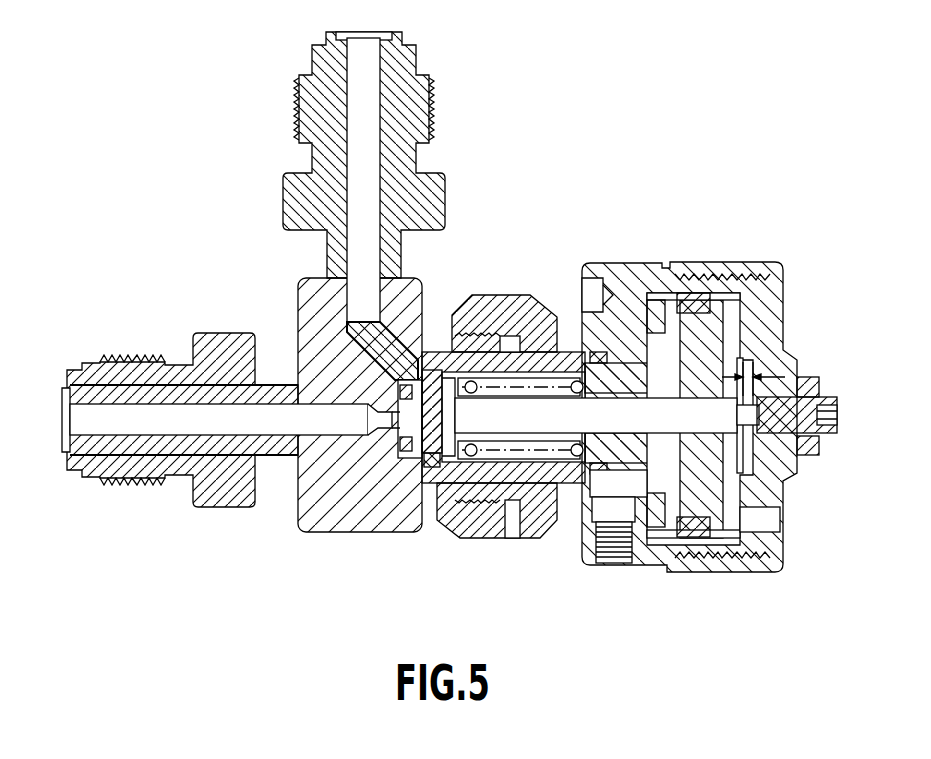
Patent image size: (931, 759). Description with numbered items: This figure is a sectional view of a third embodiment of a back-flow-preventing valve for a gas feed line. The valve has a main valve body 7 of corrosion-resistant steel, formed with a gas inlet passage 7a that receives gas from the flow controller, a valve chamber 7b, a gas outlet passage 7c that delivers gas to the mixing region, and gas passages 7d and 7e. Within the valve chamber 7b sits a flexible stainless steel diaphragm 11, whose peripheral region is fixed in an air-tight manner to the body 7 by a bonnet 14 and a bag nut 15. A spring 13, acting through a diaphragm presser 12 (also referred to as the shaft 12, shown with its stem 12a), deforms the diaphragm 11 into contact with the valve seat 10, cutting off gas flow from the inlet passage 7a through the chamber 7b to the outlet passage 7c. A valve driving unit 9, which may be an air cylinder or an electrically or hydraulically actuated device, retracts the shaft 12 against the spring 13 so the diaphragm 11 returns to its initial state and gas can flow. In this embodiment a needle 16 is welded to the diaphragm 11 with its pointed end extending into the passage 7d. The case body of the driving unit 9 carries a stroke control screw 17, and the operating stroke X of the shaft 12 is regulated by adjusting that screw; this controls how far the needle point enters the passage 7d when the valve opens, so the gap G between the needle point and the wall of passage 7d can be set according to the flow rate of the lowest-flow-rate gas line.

The main valve body 7 is at (310, 505).
The gas inlet passage 7a is at (355, 290).
The valve chamber 7b is at (421, 352).
The gas outlet passage 7c is at (305, 422).
The gas passage 7d is at (392, 442).
The gas passage 7e is at (417, 377).
The valve driving unit 9 is at (628, 280).
The valve seat 10 is at (414, 428).
The diaphragm 11 is at (425, 483).
The diaphragm presser 12 is at (547, 473).
The valve stem 12a is at (445, 412).
The spring 13 is at (481, 355).
The bonnet 14 is at (575, 483).
The bag nut 15 is at (486, 523).
The needle 16 is at (402, 400).
The stroke control screw 17 is at (825, 453).
The gap G is at (403, 432).
The operating stroke X is at (758, 372).